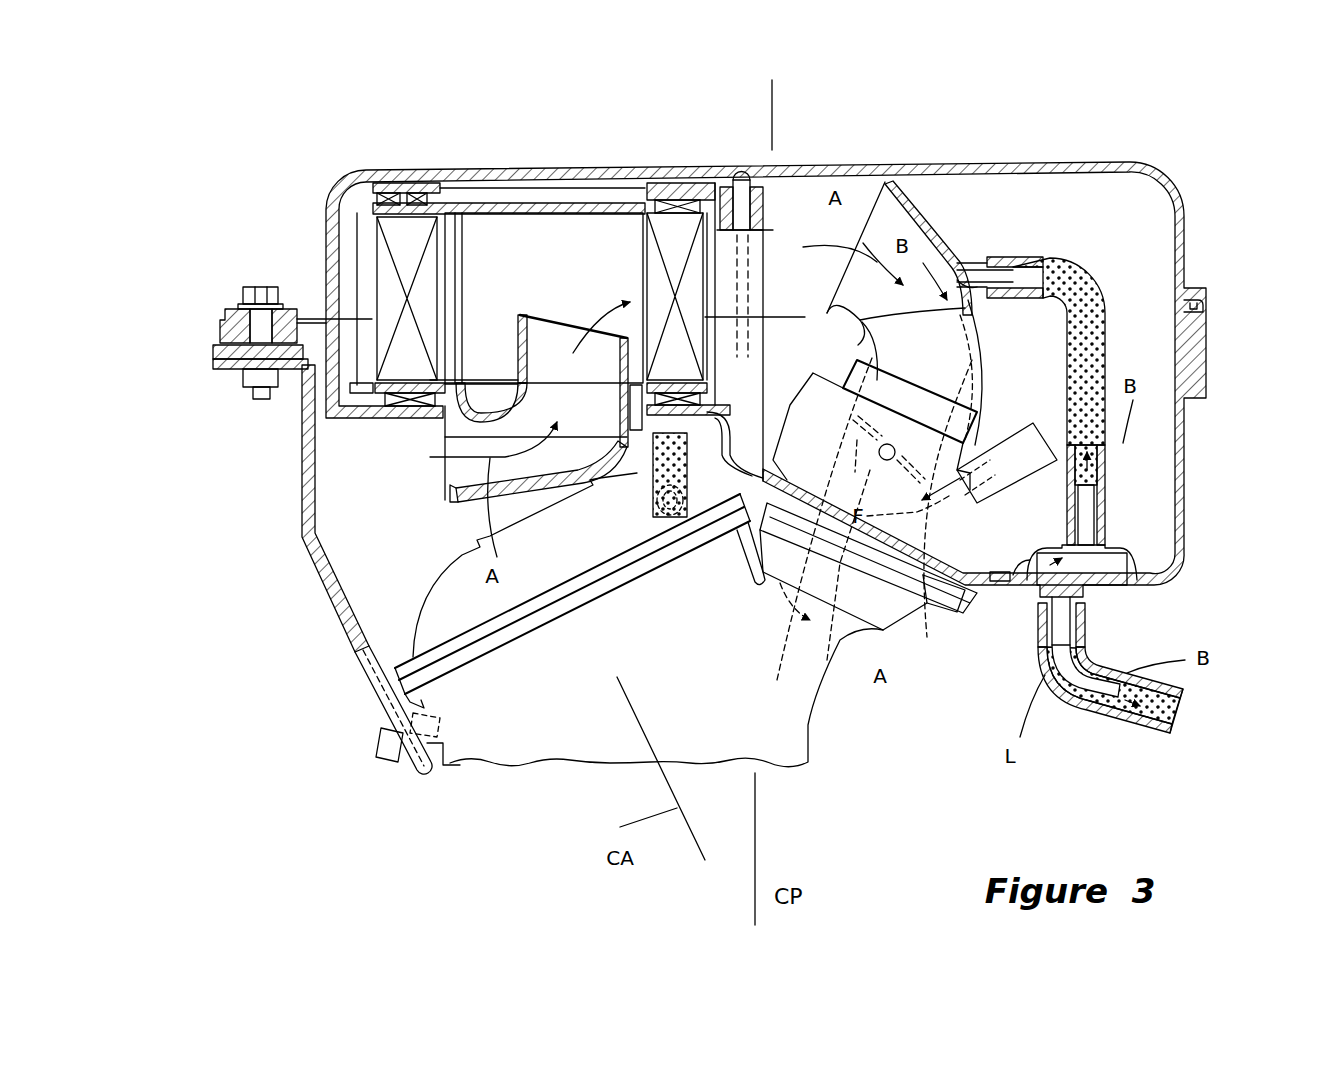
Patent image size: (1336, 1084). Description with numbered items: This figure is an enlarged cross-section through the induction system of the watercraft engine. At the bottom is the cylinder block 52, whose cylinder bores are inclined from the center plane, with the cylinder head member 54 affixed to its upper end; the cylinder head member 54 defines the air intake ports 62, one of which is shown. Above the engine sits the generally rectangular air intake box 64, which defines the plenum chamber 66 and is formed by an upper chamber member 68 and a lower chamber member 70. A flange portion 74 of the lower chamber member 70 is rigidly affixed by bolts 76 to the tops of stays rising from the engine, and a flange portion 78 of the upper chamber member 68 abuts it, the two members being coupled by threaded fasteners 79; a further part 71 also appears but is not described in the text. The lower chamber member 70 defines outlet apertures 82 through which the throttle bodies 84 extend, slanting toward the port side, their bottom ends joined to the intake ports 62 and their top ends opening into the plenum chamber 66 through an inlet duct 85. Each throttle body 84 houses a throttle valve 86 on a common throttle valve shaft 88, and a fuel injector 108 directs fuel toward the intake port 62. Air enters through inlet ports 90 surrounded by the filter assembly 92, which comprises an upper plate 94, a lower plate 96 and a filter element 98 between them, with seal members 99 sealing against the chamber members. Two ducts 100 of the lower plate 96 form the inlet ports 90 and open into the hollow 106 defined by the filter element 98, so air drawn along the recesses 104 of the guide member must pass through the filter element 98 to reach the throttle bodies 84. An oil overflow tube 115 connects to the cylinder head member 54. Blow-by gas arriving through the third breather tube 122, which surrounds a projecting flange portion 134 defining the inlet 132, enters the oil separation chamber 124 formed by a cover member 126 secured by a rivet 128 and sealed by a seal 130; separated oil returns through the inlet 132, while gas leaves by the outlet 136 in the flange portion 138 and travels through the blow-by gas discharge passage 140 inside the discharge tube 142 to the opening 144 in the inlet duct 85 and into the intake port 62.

The cylinder block 52 is at (807, 720).
The cylinder head member 54 is at (483, 610).
The air intake ports 62 is at (841, 621).
The air intake box 64 is at (305, 226).
The plenum chamber 66 is at (830, 183).
The upper chamber member 68 is at (343, 180).
The lower chamber member 70 is at (387, 423).
The mounting bracket 71 is at (300, 523).
The flange portion 74 is at (220, 330).
The bolts 76 is at (260, 283).
The flange portion 78 is at (740, 213).
The fasteners 79 is at (1197, 288).
The outlet apertures 82 is at (927, 605).
The throttle bodies 84 is at (800, 400).
The inlet duct 85 is at (923, 213).
The throttle valve 86 is at (868, 546).
The throttle valve shaft 88 is at (890, 442).
The air inlet ports 90 is at (557, 342).
The filter assembly 92 is at (420, 513).
The upper plate 94 is at (360, 175).
The lower plate 96 is at (357, 368).
The filter element 98 is at (390, 297).
The seal members 99 is at (397, 187).
The ducts 100 is at (520, 363).
The recesses 104 is at (545, 475).
The hollow 106 is at (580, 252).
The fuel injectors 108 is at (1013, 440).
The oil overflow tube 115 is at (643, 477).
The third breather tube 122 is at (1147, 727).
The oil separation chamber 124 is at (1098, 648).
The cover member 126 is at (1057, 543).
The rivet 128 is at (1000, 560).
The seal 130 is at (1100, 573).
The inlet 132 is at (1042, 600).
The projecting flange portion 134 is at (1038, 645).
The outlet 136 is at (1090, 537).
The flange portion 138 is at (1110, 510).
The blow-by gas discharge passage 140 is at (1030, 300).
The discharge tube 142 is at (1093, 283).
The opening 144 is at (1003, 277).